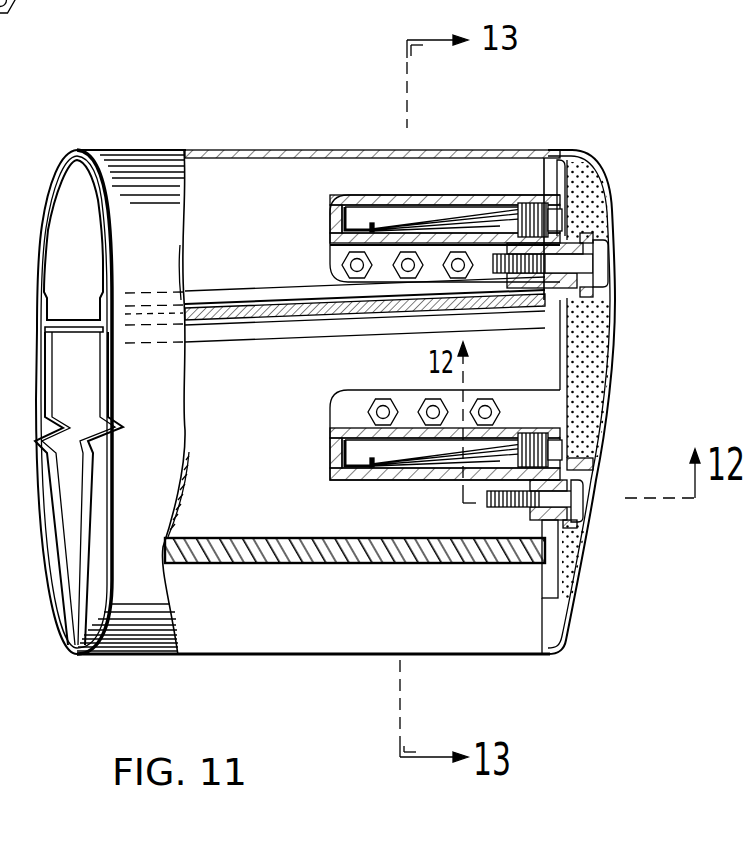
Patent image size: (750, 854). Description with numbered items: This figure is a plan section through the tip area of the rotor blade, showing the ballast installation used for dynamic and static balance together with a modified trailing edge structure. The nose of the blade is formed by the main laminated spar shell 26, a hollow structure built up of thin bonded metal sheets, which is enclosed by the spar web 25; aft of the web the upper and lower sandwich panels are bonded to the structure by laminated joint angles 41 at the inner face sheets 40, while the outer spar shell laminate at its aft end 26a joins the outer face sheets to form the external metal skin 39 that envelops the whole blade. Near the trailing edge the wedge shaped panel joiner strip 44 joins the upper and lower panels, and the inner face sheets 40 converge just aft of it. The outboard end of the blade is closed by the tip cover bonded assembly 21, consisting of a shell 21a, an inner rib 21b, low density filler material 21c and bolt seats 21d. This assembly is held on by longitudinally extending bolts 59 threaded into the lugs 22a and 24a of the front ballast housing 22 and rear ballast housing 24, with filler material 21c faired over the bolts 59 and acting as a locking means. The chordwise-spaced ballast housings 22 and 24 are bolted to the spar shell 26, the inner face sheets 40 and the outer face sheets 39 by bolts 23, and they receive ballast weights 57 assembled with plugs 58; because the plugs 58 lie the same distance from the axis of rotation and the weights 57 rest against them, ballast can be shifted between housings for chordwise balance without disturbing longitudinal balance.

The tip cover bonded assembly 21 is at (613, 213).
The shell 21a is at (562, 652).
The inner rib 21b is at (545, 190).
The low density filler material 21c is at (590, 192).
The bolt seats 21d is at (600, 294).
The front ballast housing 22 is at (330, 198).
The lug 22a is at (528, 284).
The bolts 23 is at (388, 420).
The rear ballast housing 24 is at (332, 455).
The lug 24a is at (525, 516).
The spar web 25 is at (267, 314).
The main laminated spar shell 26 is at (130, 180).
The aft end of outer spar shell laminate 26a is at (116, 380).
The external metal skin 39 is at (120, 606).
The inner face sheets 40 is at (215, 500).
The laminated joint angles 41 is at (205, 343).
The wedge shaped panel joiner strip 44 is at (303, 566).
The ballast weights 57 is at (400, 222).
The plugs 58 is at (545, 196).
The bolts 59 is at (607, 262).